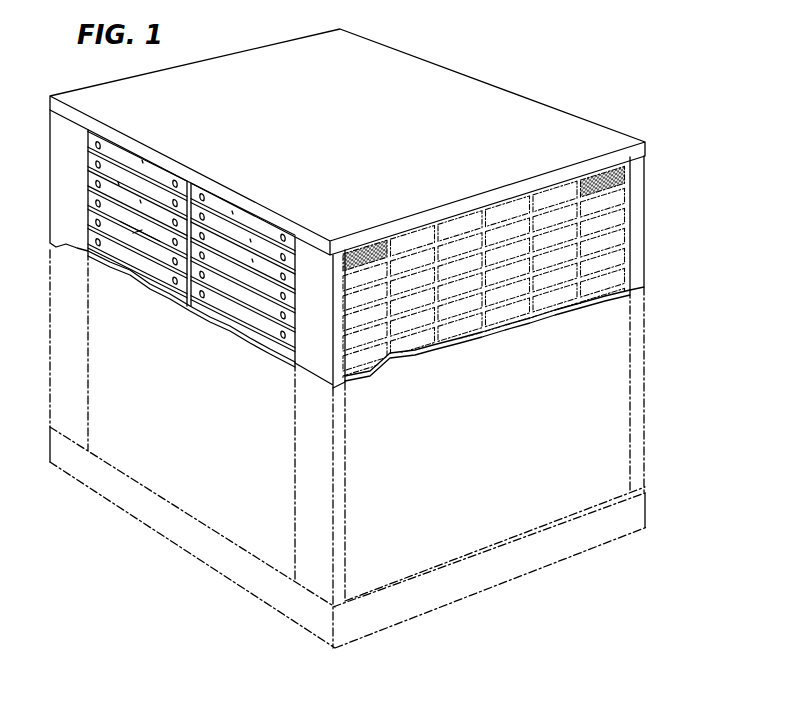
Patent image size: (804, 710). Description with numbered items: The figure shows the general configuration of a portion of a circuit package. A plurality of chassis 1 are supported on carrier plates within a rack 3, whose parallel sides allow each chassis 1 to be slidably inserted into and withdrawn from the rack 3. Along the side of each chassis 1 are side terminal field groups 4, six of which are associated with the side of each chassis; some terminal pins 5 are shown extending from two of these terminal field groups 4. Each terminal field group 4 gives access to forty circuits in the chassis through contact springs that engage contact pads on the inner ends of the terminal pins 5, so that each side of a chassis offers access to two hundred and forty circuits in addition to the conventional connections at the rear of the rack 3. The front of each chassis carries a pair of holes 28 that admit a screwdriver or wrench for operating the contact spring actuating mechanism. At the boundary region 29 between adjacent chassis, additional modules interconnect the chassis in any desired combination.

The chassis 1 is at (191, 235).
The rack 3 is at (72, 238).
The side terminal field group 4 is at (590, 180).
The terminal pin 5 is at (613, 168).
The hole 28 is at (207, 296).
The boundary region 29 is at (191, 180).